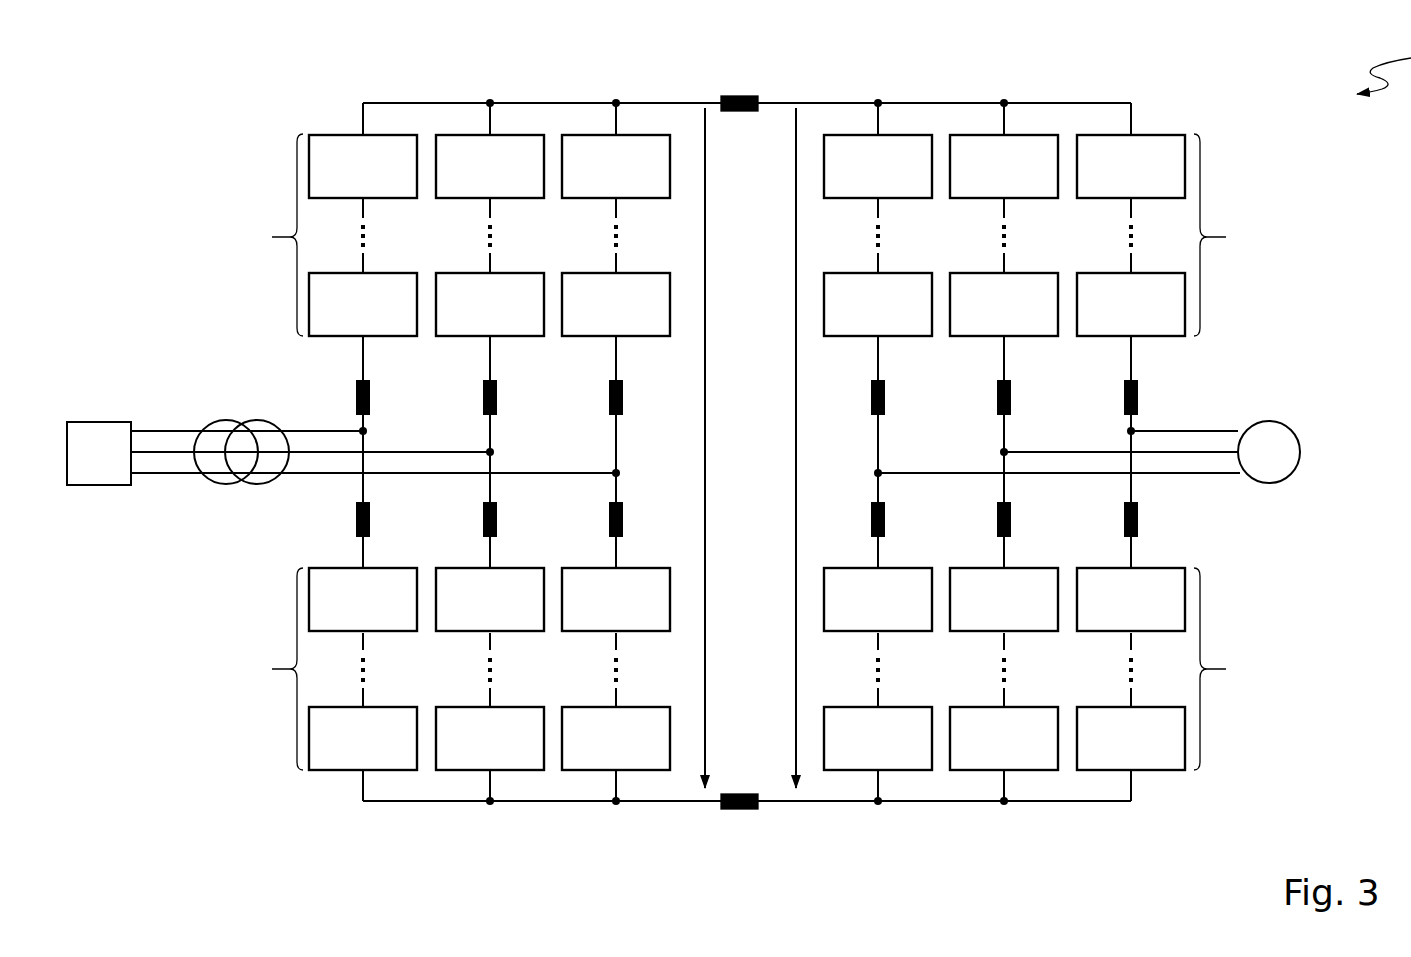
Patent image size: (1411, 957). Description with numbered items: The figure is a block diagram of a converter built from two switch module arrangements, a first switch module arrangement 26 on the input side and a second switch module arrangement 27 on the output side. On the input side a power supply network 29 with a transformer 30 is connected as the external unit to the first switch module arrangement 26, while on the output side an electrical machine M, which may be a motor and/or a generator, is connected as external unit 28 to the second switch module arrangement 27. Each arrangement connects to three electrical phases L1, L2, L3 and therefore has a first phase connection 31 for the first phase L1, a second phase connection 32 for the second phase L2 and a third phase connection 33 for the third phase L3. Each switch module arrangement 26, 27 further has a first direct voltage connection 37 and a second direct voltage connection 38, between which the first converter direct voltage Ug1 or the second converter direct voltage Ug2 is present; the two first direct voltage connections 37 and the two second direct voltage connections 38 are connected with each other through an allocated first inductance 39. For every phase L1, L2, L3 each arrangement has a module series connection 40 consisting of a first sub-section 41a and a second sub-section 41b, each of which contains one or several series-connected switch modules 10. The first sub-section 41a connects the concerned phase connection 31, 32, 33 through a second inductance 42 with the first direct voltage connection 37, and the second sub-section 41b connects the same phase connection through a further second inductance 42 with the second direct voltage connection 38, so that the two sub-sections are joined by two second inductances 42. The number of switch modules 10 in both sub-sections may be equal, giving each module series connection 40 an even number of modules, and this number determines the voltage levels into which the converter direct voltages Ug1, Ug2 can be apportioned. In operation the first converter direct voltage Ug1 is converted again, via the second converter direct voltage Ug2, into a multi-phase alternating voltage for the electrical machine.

The switch module 10 is at (1144, 749).
The first switch module arrangement 26 is at (261, 145).
The second switch module arrangement 27 is at (1224, 108).
The external unit 28 is at (172, 518).
The power supply network 29 is at (118, 486).
The transformer 30 is at (240, 485).
The first phase connection 31 is at (366, 432).
The second phase connection 32 is at (493, 453).
The third phase connection 33 is at (619, 474).
The first direct voltage connection 37 is at (661, 102).
The second direct voltage connection 38 is at (656, 804).
The first inductance 39 is at (742, 95).
The module series connection 40 is at (345, 126).
The first sub-section 41a is at (753, 235).
The second sub-section 41b is at (754, 669).
The second inductance 42 is at (770, 458).
The first phase L1 is at (301, 430).
The second phase L2 is at (310, 455).
The third phase L3 is at (330, 476).
The first converter direct voltage Ug1 is at (682, 448).
The second converter direct voltage Ug2 is at (819, 448).